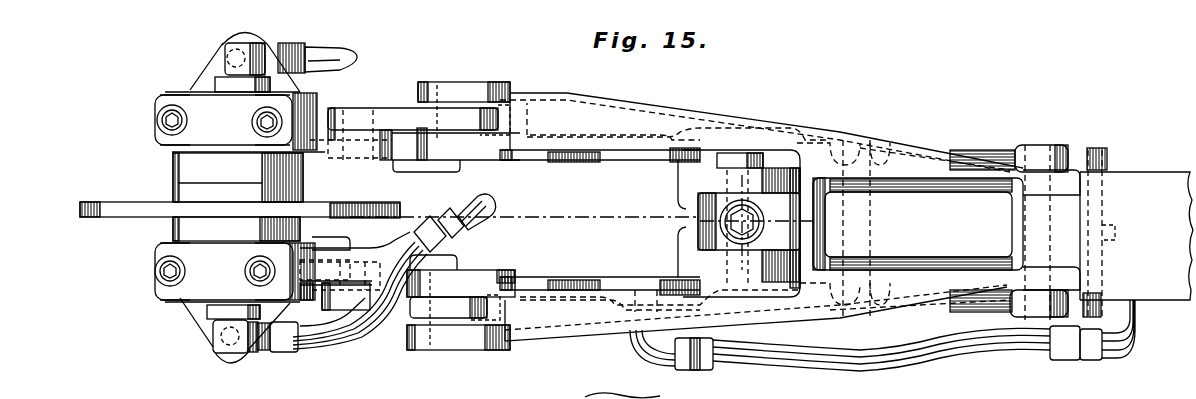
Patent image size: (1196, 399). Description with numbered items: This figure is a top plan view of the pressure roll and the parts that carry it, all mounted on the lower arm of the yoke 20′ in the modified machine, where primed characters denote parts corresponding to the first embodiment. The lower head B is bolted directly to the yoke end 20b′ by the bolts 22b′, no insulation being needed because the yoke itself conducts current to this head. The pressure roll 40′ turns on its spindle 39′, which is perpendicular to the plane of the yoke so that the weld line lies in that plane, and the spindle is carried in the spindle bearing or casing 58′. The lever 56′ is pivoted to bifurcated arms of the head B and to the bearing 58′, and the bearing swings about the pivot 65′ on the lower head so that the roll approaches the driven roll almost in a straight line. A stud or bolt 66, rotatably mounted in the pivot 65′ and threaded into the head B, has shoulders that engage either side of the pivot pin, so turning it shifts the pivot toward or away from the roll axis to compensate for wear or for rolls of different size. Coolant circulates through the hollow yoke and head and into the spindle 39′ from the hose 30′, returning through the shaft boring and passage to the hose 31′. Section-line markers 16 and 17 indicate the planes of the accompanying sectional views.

The section line 17- 17 is at (254, 20).
The section line 16- 16 is at (67, 202).
The hose 31′ is at (340, 52).
The pressure roll 40′ is at (122, 202).
The lever 56′ is at (393, 116).
The lower head B is at (804, 126).
The spindle bearing 58′ is at (622, 172).
The pivot 65′ is at (738, 158).
The stud or bolt 66 is at (686, 208).
The yoke's other end 20b′ is at (905, 205).
The bolts 22b′ is at (1035, 160).
The yoke 20′ is at (1144, 178).
The hose 30′ is at (345, 338).
The spindle 39′ is at (562, 396).